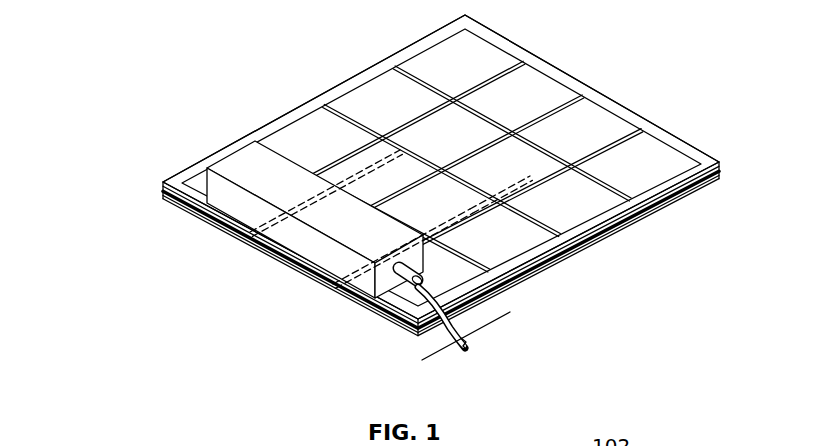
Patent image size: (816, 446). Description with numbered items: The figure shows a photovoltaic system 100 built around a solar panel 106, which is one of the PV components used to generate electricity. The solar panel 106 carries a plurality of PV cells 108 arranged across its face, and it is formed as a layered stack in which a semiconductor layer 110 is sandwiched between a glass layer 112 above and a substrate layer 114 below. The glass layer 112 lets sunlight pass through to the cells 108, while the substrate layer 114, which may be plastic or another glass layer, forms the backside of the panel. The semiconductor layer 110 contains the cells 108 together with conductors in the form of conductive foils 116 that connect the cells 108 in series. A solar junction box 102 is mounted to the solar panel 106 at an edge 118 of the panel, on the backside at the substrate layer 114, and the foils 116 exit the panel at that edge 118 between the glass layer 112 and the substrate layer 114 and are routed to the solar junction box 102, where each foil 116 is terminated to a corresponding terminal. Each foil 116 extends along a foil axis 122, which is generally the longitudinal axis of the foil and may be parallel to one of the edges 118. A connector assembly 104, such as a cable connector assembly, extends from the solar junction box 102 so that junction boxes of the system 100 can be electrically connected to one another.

The photovoltaic system 100 is at (266, 50).
The solar junction box 102 is at (246, 252).
The connector assembly 104 is at (410, 287).
The solar panel 106 is at (395, 62).
The PV cell 108 is at (478, 62).
The semiconductor layer 110 is at (158, 187).
The glass layer 112 is at (173, 199).
The substrate layer 114 is at (178, 175).
The conductive foil 116 is at (252, 233).
The edge 118 is at (301, 273).
The foil axis 122 is at (500, 193).